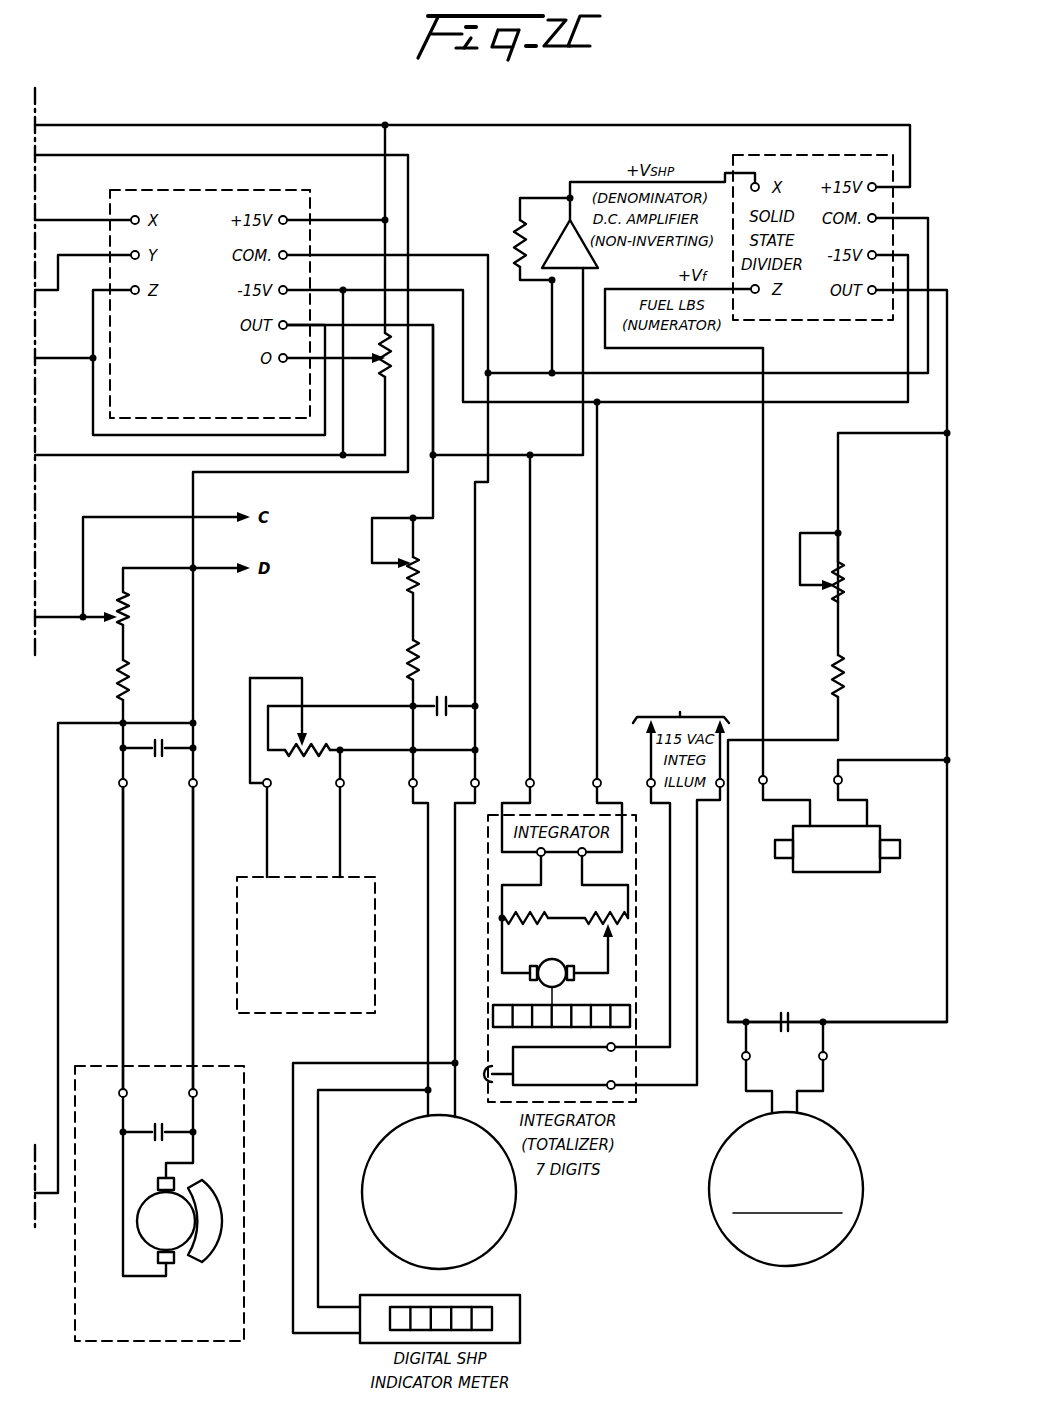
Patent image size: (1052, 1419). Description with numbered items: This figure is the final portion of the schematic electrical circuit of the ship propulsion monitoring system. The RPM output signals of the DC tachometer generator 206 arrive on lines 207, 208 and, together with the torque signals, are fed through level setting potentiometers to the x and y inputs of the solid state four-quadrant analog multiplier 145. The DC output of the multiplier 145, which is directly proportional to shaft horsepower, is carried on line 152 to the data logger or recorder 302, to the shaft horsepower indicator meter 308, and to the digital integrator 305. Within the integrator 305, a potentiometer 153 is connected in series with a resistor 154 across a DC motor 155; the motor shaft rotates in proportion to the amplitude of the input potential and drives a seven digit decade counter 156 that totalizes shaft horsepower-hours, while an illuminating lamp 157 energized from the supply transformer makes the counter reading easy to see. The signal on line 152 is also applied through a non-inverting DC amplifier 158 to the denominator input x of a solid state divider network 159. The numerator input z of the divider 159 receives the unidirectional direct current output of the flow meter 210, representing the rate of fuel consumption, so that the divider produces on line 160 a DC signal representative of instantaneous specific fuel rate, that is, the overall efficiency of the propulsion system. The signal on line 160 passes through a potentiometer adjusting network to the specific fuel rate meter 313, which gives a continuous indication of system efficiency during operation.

The solid state four-quadrant analog multiplier 145 is at (217, 191).
The line 152 is at (433, 408).
The potentiometer 153 is at (603, 918).
The resistor 154 is at (523, 913).
The DC motor 155 is at (553, 962).
The seven digit decade counter 156 is at (607, 1008).
The illuminating lamp 157 is at (482, 1060).
The non-inverting DC amplifier 158 is at (575, 262).
The solid state divider network 159 is at (800, 323).
The line 160 is at (838, 502).
The DC tachometer generator 206 is at (243, 1140).
The line 207 is at (122, 857).
The line 208 is at (192, 887).
The flow meter 210 is at (830, 828).
The data logger or recorder 302 is at (275, 1015).
The digital integrator 305 is at (557, 958).
The shaft horsepower indicator meter 308 is at (383, 1143).
The specific fuel rate meter 313 is at (712, 1200).